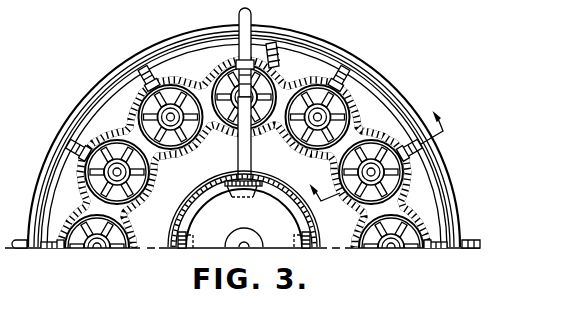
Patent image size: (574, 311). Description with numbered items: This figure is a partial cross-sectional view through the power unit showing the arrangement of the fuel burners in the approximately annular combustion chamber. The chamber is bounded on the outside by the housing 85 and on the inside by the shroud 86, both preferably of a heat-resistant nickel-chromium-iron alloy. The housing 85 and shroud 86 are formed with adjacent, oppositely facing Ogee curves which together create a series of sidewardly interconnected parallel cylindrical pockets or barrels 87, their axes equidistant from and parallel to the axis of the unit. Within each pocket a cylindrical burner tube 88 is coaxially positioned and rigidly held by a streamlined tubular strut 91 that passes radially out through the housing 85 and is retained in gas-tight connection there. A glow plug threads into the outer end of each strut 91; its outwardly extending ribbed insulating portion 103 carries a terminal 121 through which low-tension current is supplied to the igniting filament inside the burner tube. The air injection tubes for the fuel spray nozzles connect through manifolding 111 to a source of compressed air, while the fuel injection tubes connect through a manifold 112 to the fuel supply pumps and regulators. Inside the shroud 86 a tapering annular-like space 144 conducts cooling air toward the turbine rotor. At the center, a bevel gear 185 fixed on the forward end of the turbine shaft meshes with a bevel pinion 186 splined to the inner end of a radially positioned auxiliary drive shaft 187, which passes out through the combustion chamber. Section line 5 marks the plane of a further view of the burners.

The section line 5— 5 is at (375, 151).
The housing 85 is at (135, 107).
The shroud 86 is at (143, 249).
The pockets or barrels 87 is at (90, 185).
The burner tubes 88 is at (75, 249).
The tubular strut 91 is at (140, 86).
The ribbed insulating portion 103 is at (95, 139).
The manifolding 111 is at (435, 180).
The manifold 112 is at (455, 212).
The terminal 121 is at (172, 215).
The tapering annular-like space 144 is at (266, 140).
The bevel gear 185 is at (290, 209).
The bevel pinions 186 is at (228, 175).
The auxiliary drive shaft 187 is at (240, 18).